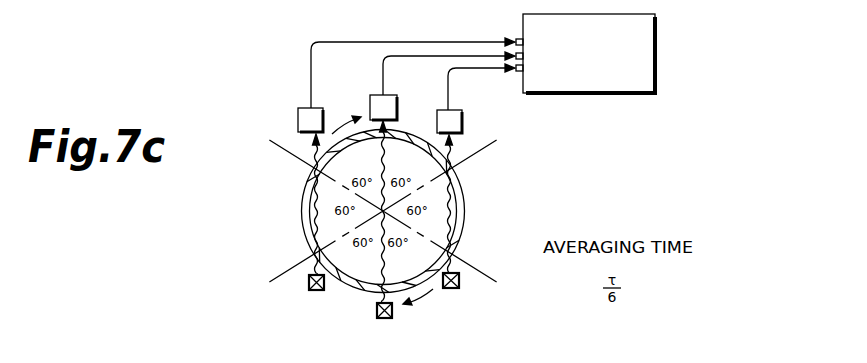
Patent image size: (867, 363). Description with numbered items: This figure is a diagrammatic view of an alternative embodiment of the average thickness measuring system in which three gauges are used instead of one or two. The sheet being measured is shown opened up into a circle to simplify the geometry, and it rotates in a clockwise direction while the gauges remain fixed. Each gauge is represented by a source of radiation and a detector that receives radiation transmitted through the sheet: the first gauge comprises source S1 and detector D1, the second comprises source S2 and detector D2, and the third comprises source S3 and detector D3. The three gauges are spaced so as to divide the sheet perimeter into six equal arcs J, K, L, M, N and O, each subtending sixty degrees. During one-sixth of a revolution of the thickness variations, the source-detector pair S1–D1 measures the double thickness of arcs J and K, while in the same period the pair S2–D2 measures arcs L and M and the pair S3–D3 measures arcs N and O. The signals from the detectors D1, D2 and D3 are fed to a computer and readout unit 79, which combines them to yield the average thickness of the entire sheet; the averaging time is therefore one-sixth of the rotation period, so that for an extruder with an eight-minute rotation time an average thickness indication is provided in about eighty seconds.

The computer and readout unit 79 is at (662, 40).
The detector D1 is at (297, 117).
The detector D2 is at (390, 96).
The detector D3 is at (462, 120).
The source of radiation S1 is at (309, 283).
The source of radiation S2 is at (377, 312).
The source of radiation S3 is at (459, 288).
The arc J is at (301, 214).
The arc K is at (346, 285).
The arc L is at (427, 268).
The arc M is at (348, 145).
The arc N is at (437, 152).
The arc O is at (464, 213).